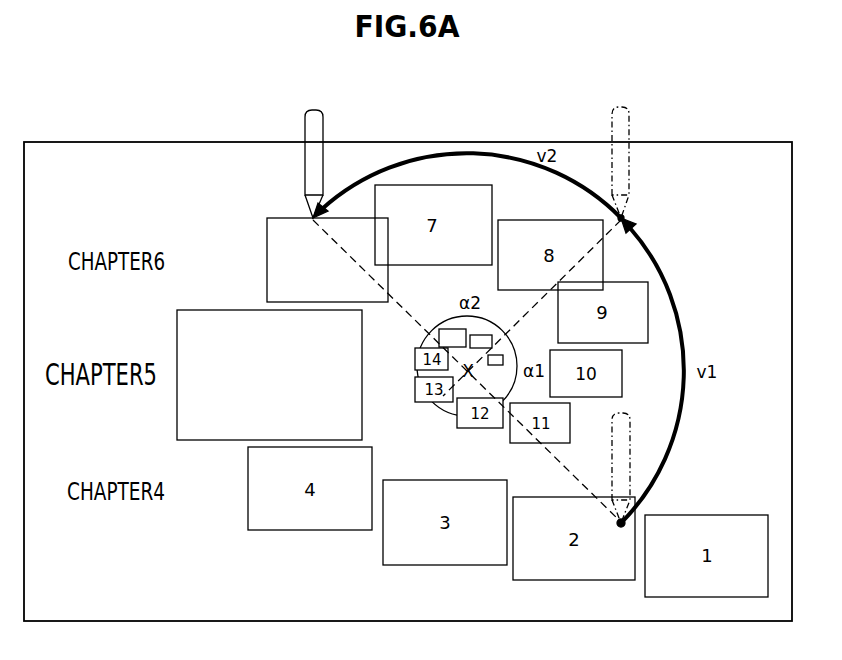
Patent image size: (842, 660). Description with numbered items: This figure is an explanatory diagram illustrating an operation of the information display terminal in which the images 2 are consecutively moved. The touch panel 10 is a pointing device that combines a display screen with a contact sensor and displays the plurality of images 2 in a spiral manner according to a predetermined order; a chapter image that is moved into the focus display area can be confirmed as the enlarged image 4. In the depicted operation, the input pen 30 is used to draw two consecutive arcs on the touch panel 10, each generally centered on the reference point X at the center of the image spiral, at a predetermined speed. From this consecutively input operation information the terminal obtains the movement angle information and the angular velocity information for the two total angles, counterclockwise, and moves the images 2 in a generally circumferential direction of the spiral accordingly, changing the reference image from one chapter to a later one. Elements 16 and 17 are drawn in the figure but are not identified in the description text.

The touch panel 10 is at (436, 142).
The input pen 30 is at (318, 110).
The images 2 is at (268, 218).
The enlarged image 4 is at (223, 310).
The icon 16 is at (442, 345).
The circular region 17 is at (446, 409).